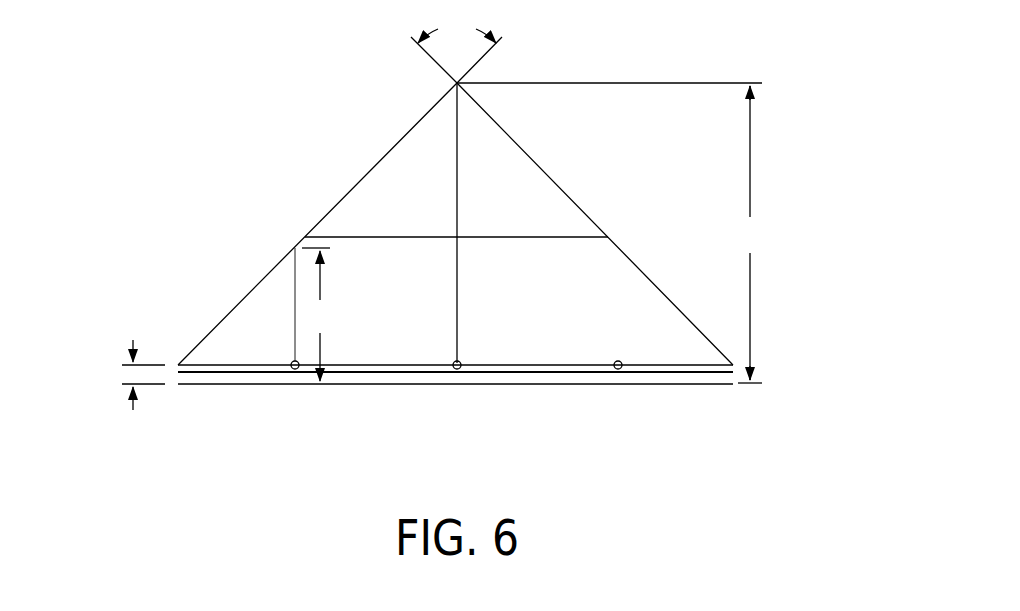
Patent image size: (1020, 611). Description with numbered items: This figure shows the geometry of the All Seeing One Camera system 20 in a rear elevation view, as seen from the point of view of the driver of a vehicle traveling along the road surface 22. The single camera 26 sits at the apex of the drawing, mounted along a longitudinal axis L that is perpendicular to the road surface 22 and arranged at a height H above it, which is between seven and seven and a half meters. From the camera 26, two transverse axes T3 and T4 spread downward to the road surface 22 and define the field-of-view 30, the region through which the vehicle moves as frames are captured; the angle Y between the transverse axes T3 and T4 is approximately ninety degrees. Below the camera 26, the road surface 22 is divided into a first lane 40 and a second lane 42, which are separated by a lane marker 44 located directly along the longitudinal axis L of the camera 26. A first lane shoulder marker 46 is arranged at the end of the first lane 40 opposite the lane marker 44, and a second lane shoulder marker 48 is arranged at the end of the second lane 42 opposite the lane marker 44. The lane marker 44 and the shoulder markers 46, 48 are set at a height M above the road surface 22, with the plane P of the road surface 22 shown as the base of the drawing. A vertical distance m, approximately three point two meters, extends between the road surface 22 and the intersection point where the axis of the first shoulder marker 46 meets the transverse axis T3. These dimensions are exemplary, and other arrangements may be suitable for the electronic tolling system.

The All Seeing One Camera (ASOC) system 20 is at (320, 118).
The road surface 22 is at (250, 389).
The camera 26 is at (468, 82).
The field-of-view 30 is at (403, 262).
The first lane 40 is at (392, 329).
The second lane 42 is at (544, 329).
The lane marker 44 is at (459, 358).
The first lane shoulder marker 46 is at (293, 359).
The second lane shoulder marker 48 is at (620, 358).
The plane P is at (591, 367).
The height H is at (750, 234).
The height M is at (133, 358).
The vertical distance m is at (316, 314).
The angle γ Y is at (457, 31).
The longitudinal axis L is at (460, 155).
The transverse axis T3 is at (396, 146).
The transverse axis T4 is at (567, 193).